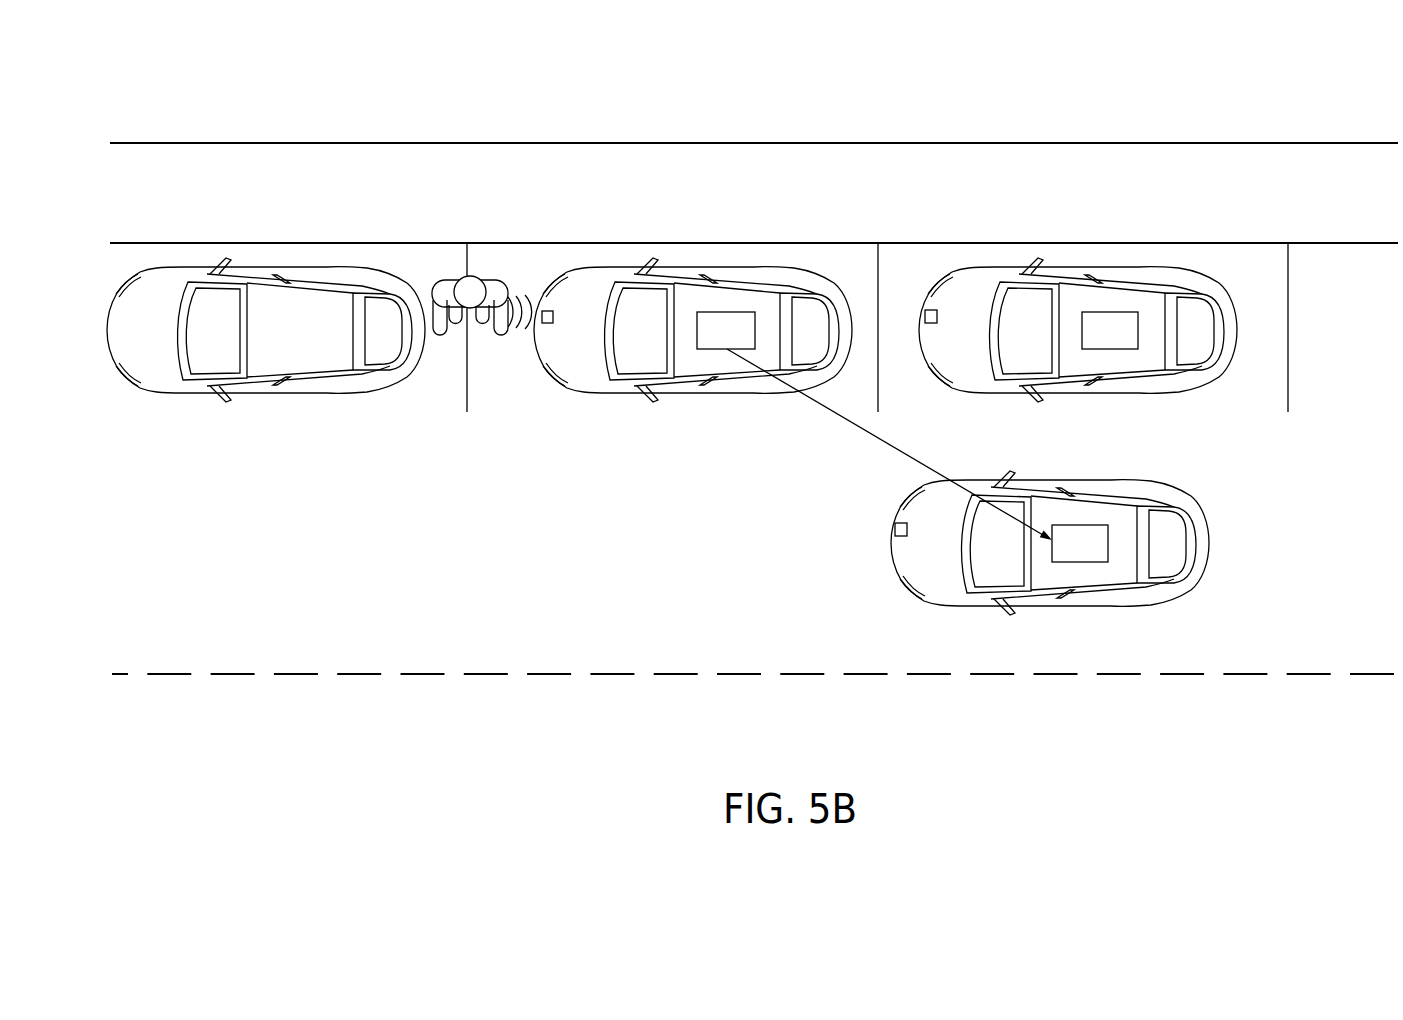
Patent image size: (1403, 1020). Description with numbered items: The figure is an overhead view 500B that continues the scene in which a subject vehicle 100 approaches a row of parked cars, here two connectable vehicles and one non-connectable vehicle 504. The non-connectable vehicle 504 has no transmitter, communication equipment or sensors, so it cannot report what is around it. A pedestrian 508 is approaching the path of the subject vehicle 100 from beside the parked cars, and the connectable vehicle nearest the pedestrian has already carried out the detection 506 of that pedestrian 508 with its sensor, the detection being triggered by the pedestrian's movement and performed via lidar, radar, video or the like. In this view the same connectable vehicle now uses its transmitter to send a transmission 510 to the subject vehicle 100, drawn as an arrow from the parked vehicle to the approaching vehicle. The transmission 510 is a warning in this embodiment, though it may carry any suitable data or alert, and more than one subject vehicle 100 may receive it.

The overhead view 500B is at (1254, 117).
The subject vehicle 100 is at (968, 607).
The non-connectable vehicle 504 is at (183, 393).
The detection 506 is at (523, 332).
The pedestrian 508 is at (458, 283).
The transmission 510 is at (862, 428).